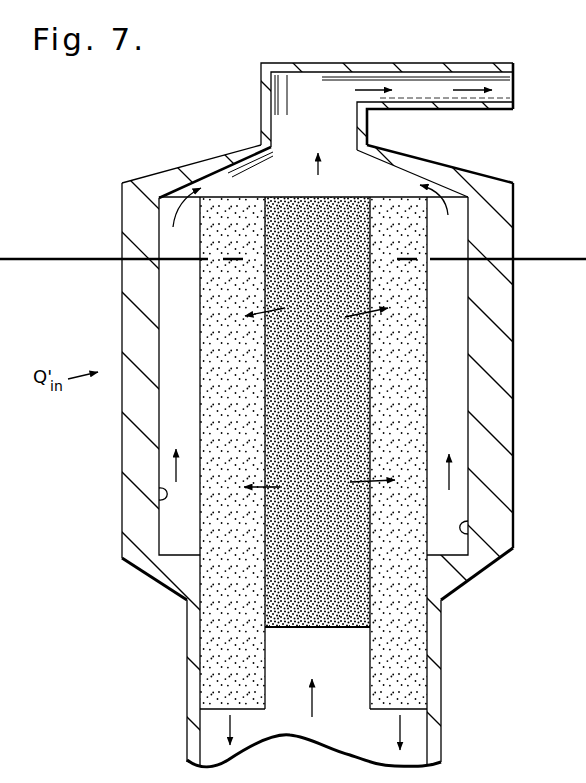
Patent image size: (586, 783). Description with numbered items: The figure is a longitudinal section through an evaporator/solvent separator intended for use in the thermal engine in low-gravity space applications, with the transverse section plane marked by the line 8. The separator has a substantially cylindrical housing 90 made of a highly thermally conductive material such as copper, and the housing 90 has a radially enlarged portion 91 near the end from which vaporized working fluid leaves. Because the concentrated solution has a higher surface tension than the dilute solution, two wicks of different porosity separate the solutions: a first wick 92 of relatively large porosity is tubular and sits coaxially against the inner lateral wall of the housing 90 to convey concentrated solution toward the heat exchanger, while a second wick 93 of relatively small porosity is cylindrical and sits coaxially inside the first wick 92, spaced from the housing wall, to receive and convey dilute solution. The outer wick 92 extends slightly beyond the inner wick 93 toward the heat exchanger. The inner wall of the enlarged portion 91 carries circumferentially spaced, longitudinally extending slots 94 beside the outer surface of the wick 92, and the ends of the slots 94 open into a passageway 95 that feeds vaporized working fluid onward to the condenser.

The section line 8- 8 is at (53, 308).
The housing 90 is at (185, 617).
The radially enlarged portion 91 is at (122, 470).
The first wick 92 is at (427, 505).
The second wick 93 is at (370, 386).
The slots 94 is at (162, 497).
The passageway 95 is at (311, 63).